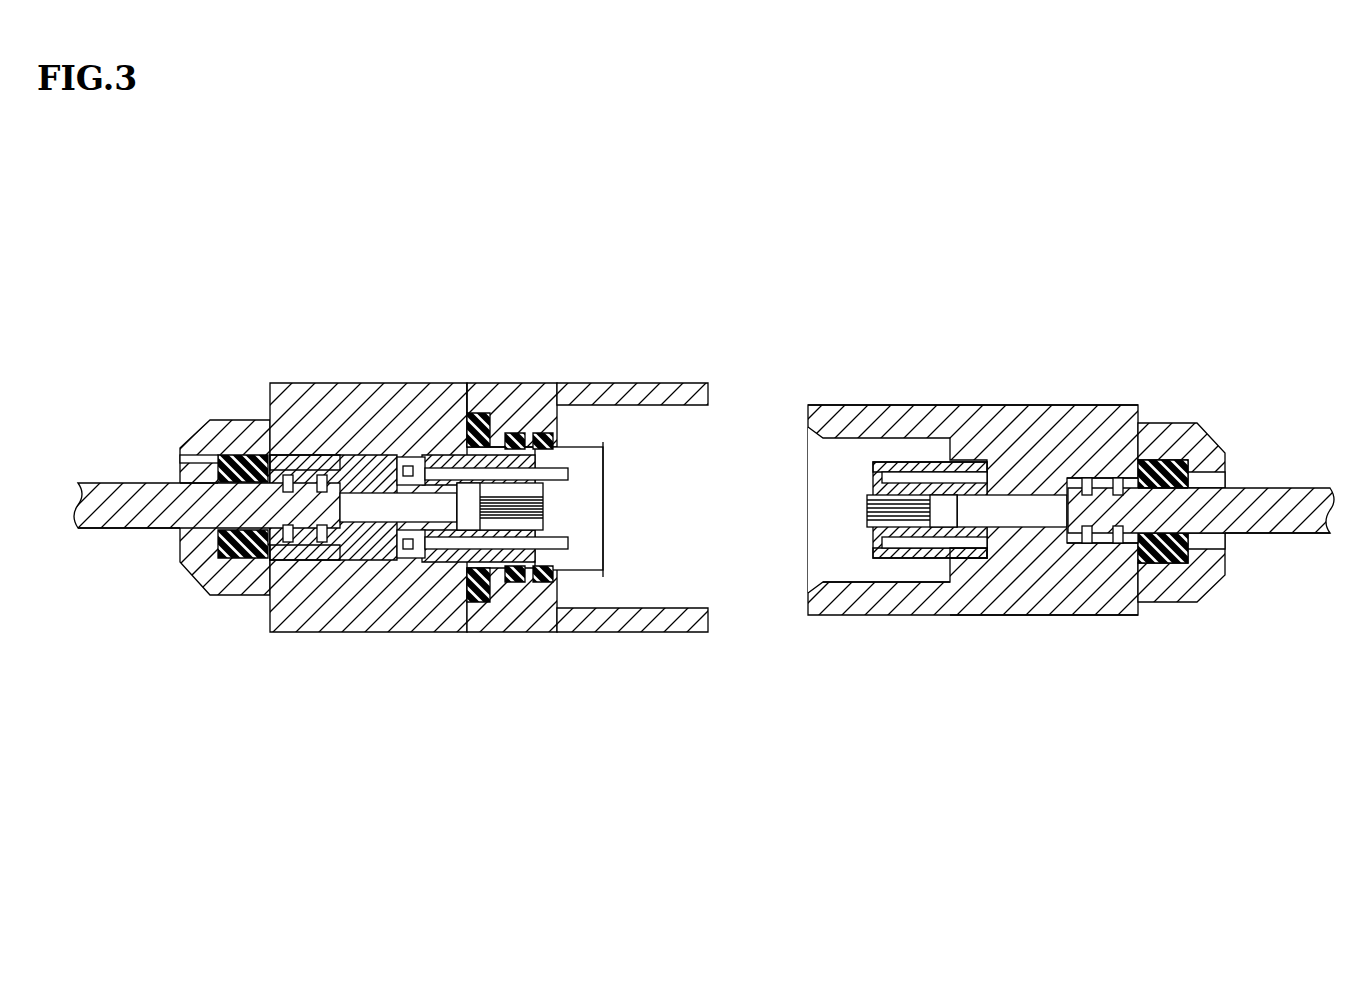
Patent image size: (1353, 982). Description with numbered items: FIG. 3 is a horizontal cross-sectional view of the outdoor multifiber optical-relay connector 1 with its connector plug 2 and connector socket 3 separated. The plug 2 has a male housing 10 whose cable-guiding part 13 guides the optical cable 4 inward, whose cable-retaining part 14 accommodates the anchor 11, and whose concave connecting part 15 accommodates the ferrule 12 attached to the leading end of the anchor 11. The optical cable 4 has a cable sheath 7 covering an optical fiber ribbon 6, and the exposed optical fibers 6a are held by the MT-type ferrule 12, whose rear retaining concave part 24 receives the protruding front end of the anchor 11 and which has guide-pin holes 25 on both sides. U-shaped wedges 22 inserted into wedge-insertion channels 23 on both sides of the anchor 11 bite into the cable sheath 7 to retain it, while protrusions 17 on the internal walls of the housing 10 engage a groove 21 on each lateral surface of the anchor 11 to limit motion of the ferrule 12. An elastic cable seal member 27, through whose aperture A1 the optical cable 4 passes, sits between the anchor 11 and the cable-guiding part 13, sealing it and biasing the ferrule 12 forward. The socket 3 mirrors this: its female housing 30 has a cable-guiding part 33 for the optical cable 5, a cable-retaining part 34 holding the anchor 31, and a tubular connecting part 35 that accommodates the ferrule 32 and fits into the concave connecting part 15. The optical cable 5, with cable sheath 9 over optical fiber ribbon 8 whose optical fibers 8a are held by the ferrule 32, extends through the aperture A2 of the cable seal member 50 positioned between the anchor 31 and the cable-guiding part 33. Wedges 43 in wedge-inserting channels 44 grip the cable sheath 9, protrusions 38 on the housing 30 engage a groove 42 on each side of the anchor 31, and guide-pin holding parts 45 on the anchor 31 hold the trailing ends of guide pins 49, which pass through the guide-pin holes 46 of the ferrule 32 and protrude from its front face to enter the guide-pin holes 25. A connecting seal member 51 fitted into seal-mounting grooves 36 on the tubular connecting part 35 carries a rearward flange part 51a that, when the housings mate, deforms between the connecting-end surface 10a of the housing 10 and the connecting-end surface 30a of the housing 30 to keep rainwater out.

The optical connector 1 is at (733, 240).
The connector plug 2 is at (1043, 404).
The connector socket 3 is at (328, 383).
The optical cable 4 is at (1294, 487).
The optical cable 5 is at (105, 479).
The optical fiber ribbon 6 is at (985, 560).
The optical fibers 6a is at (873, 495).
The cable sheath 7 is at (1290, 525).
The optical fiber ribbon 8 is at (385, 515).
The optical fibers 8a is at (545, 505).
The cable sheath 9 is at (150, 518).
The housing 10 is at (1005, 420).
The connecting-end surface 10a is at (808, 440).
The anchor 11 is at (1060, 478).
The ferrule 12 is at (915, 465).
The cable-guiding part 13 is at (1210, 490).
The cable-retaining part 14 is at (1025, 585).
The concave connecting part 15 is at (825, 565).
The protrusions 17 is at (1092, 477).
The groove 21 is at (1120, 477).
The wedge 22 is at (1130, 478).
The wedge-insertion channel 23 is at (1170, 470).
The retaining concave part 24 is at (955, 555).
The guide-pin holes 25 is at (962, 470).
The cable seal member 27 is at (1180, 558).
The housing 30 is at (450, 383).
The connecting-end surface 30a is at (472, 425).
The anchor 31 is at (368, 470).
The ferrule 32 is at (535, 470).
The cable-guiding part 33 is at (183, 478).
The cable-retaining part 34 is at (345, 562).
The tubular connecting part 35 is at (575, 580).
The seal-mounting grooves 36 is at (535, 442).
The protrusions 38 is at (333, 455).
The groove 42 is at (318, 477).
The wedge 43 is at (285, 478).
The wedge-inserting channel 44 is at (240, 462).
The guide-pin holding parts 45 is at (415, 468).
The guide-pin holes 46 is at (488, 432).
The guide pins 49 is at (568, 474).
The cable seal member 50 is at (200, 458).
The connecting seal member 51 is at (600, 400).
The flange part 51a is at (500, 470).
The aperture A1 is at (1190, 520).
The aperture A2 is at (193, 510).